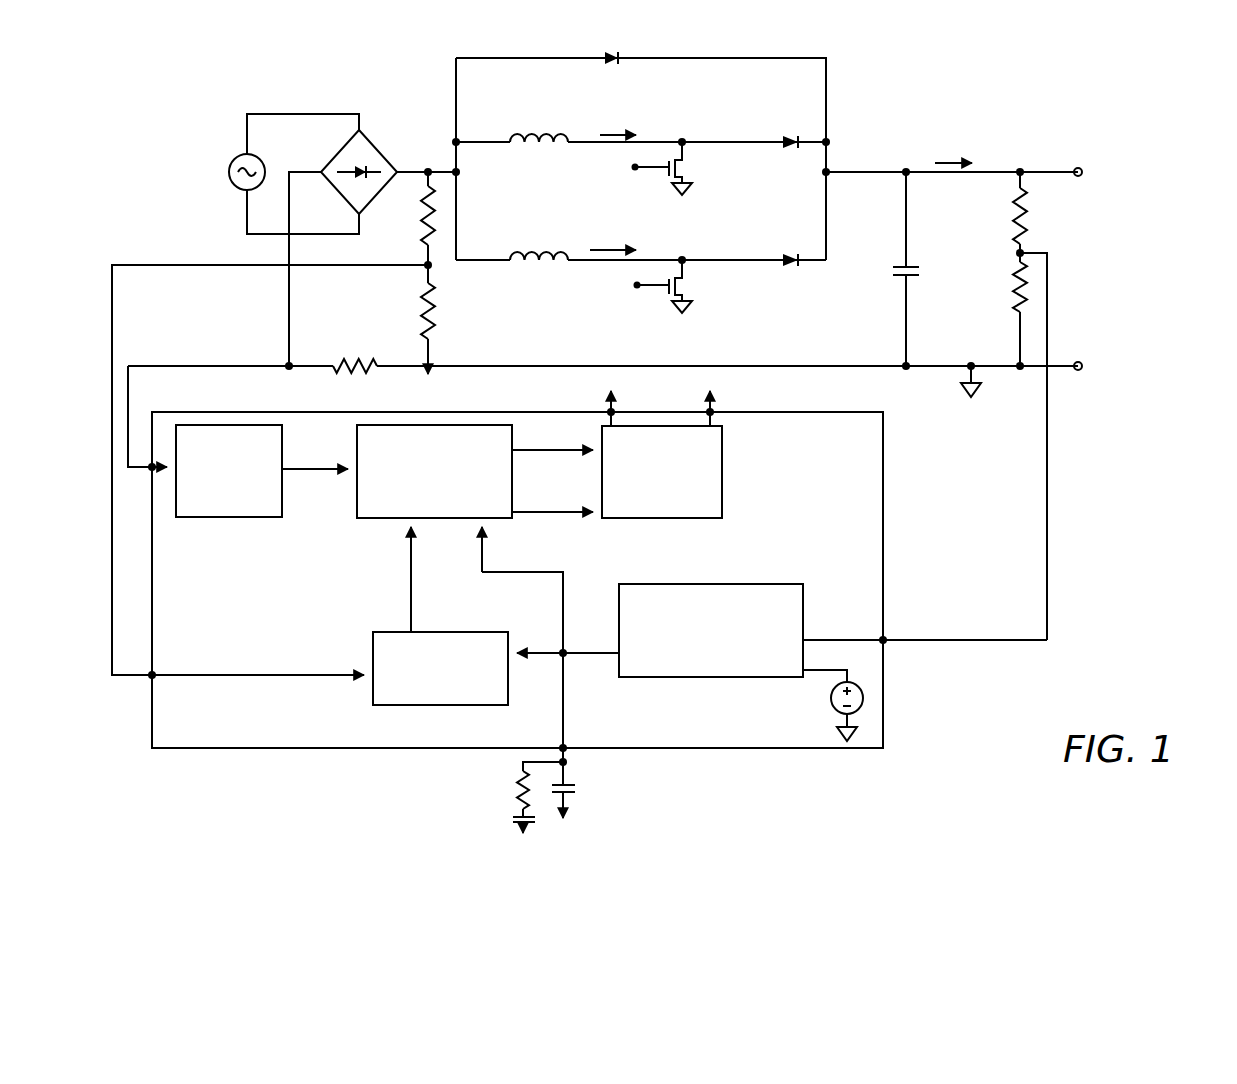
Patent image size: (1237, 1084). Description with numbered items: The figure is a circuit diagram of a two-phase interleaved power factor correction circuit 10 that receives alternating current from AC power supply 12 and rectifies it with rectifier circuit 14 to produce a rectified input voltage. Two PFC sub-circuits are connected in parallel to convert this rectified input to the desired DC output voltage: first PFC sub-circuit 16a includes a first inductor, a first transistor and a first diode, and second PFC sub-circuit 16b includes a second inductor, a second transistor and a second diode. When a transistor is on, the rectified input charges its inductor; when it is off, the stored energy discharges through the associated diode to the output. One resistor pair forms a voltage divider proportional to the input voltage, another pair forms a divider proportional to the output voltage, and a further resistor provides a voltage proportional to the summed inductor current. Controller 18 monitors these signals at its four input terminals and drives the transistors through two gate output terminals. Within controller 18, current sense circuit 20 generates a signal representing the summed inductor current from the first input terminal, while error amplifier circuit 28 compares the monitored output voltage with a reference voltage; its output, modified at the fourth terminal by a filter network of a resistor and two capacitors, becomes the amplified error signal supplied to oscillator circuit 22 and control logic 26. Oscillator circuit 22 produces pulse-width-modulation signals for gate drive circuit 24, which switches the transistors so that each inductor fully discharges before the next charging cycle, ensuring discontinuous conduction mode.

The interleaved power factor correction circuit 10 is at (946, 709).
The AC power supply 12 is at (237, 154).
The rectifier circuit 14 is at (367, 145).
The first PFC sub-circuit 16a is at (493, 126).
The second PFC sub-circuit 16b is at (486, 226).
The controller 18 is at (883, 460).
The current sense circuit 20 is at (227, 425).
The oscillator circuit 22 is at (428, 425).
The gate drive circuit 24 is at (724, 462).
The control logic 26 is at (372, 640).
The error amplifier circuit 28 is at (713, 583).